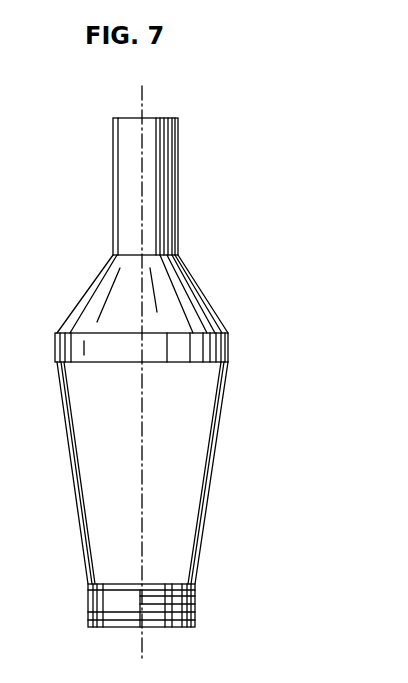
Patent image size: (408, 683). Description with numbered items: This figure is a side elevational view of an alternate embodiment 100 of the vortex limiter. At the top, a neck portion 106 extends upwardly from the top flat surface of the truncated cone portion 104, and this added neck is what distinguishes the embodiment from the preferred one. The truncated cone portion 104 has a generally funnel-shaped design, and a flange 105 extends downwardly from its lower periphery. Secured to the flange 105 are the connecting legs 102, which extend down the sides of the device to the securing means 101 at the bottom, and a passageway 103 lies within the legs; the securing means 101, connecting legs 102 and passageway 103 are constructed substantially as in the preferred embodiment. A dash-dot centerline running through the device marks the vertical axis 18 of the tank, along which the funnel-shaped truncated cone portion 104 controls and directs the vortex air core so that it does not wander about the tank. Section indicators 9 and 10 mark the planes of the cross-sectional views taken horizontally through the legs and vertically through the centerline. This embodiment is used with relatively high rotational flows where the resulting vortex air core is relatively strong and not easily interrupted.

The alternate embodiment 100 is at (218, 195).
The neck portion 106 is at (162, 153).
The truncated cone portion 104 is at (201, 294).
The flange 105 is at (231, 350).
The connecting legs 102 is at (68, 425).
The passageway 103 is at (114, 455).
The securing means 101 is at (105, 606).
The vertical axis 18 is at (143, 440).
The section line 10- 10 is at (142, 112).
The section line 9- 9 is at (70, 535).